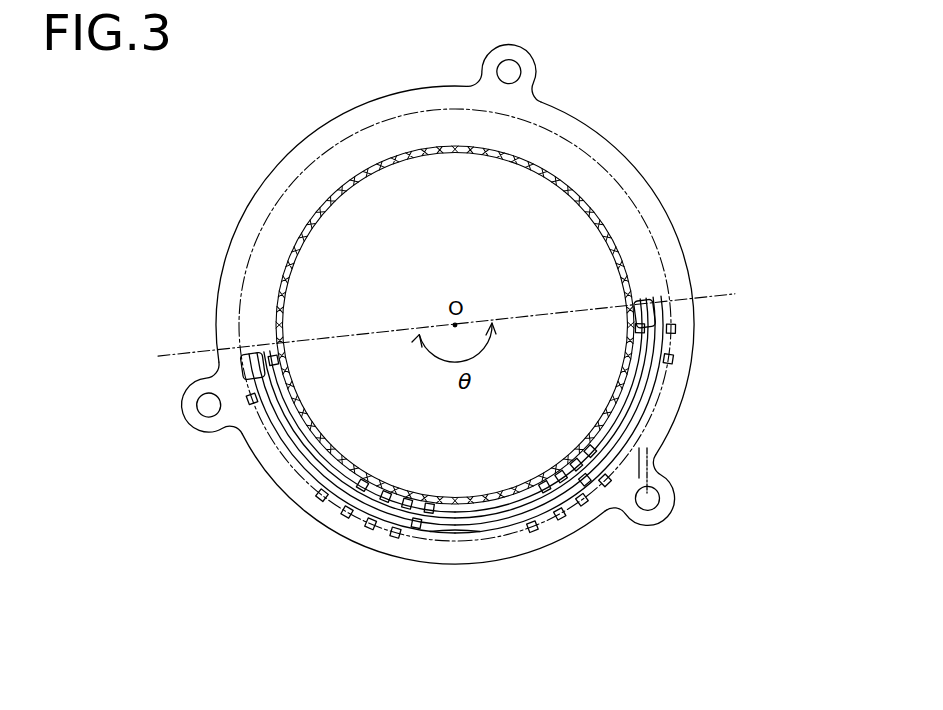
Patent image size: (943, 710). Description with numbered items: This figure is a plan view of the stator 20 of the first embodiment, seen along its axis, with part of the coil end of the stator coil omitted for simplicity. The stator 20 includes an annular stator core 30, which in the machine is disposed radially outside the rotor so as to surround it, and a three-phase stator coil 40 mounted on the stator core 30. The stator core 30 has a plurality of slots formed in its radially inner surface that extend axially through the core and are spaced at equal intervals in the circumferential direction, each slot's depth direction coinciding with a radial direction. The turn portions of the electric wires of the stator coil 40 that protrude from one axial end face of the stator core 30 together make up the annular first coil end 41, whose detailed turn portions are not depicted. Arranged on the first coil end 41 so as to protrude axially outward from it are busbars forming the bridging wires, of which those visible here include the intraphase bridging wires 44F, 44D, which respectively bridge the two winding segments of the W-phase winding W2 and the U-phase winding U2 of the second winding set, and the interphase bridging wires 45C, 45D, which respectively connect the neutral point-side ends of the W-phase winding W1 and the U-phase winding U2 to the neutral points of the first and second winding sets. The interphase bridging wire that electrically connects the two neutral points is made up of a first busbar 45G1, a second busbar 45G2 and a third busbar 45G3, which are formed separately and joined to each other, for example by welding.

The stator 20 is at (686, 152).
The stator core 30 is at (247, 194).
The stator coil 40 is at (362, 120).
The first coil end 41 is at (332, 165).
The intraphase bridging wire 44F is at (262, 362).
The intraphase bridging wire 44D is at (630, 413).
The interphase bridging wire 45C is at (305, 452).
The interphase bridging wire 45D is at (642, 398).
The first busbar 45G1 is at (590, 482).
The second busbar 45G2 is at (472, 534).
The third busbar 45G3 is at (390, 510).